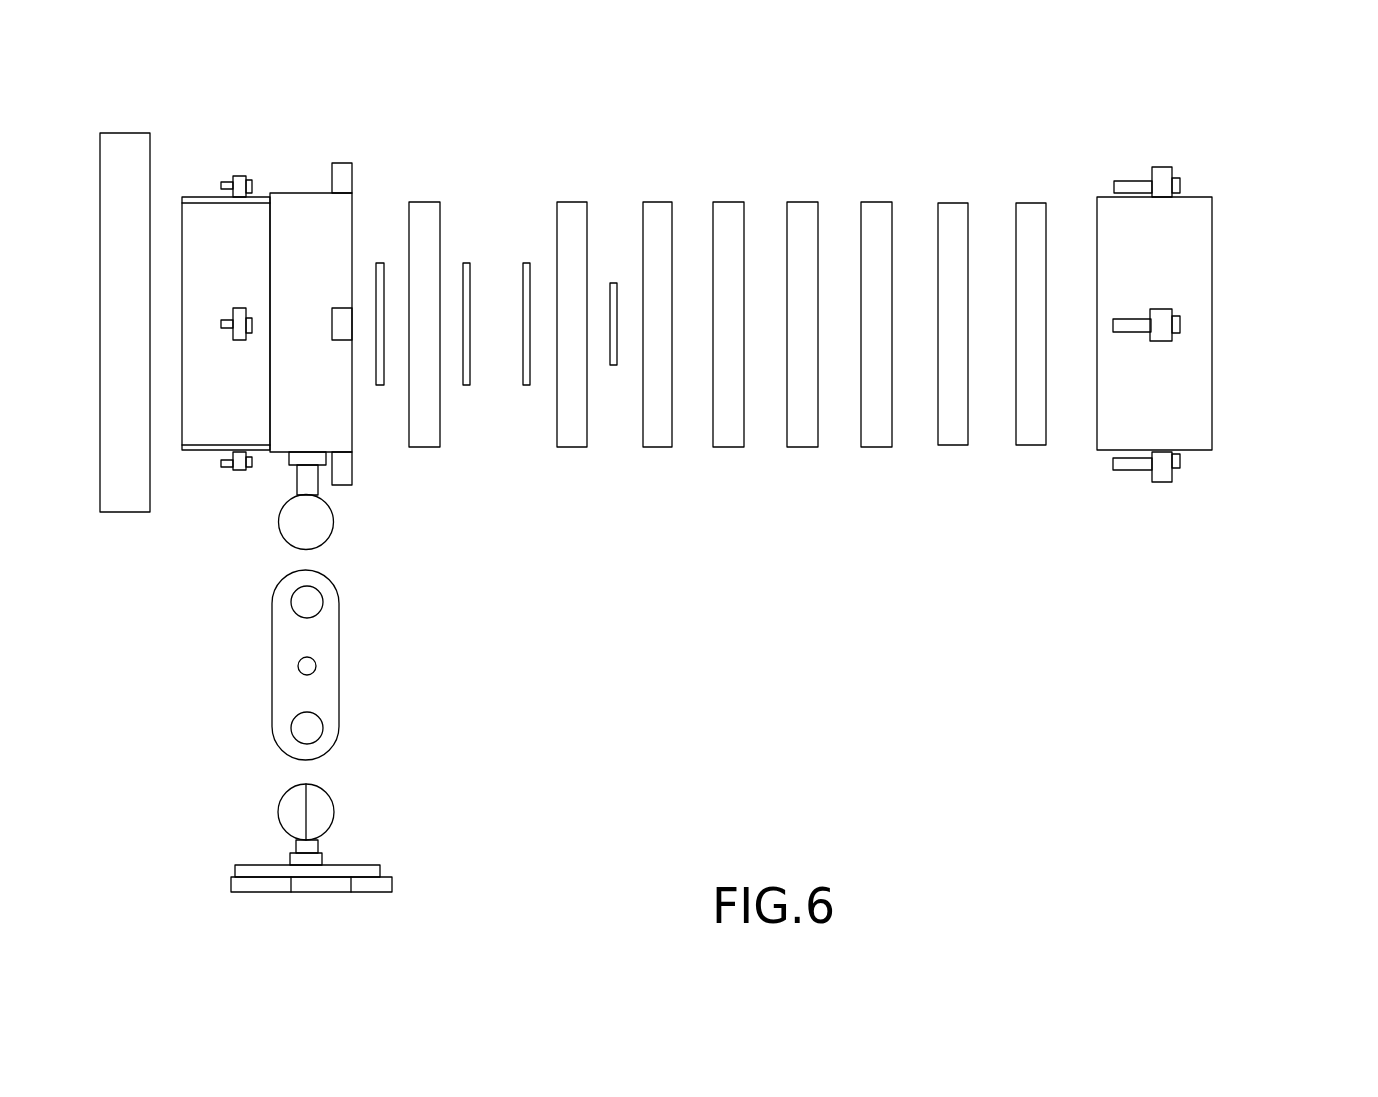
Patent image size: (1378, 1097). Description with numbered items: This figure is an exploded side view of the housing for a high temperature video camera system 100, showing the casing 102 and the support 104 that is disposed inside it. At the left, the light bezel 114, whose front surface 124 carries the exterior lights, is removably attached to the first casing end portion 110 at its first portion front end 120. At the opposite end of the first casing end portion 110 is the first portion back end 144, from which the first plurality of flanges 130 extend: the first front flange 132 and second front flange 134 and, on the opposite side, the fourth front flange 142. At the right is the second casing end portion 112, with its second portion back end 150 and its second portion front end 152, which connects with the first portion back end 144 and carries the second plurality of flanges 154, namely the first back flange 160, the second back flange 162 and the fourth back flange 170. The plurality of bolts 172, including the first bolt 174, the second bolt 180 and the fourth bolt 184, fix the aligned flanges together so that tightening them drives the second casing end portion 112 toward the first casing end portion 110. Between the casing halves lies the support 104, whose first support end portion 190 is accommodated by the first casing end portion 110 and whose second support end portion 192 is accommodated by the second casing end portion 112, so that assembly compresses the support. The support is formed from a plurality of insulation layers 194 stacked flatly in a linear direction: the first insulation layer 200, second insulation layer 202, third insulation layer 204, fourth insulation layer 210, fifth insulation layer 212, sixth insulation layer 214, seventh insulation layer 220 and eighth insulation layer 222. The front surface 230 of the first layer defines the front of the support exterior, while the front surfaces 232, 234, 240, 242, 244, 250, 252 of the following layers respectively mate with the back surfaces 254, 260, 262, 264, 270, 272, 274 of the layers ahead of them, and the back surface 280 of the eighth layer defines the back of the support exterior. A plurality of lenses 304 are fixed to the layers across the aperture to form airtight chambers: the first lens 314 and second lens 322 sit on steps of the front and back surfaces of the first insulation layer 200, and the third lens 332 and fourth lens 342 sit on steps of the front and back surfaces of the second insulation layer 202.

The high temperature video camera system 100 is at (940, 688).
The casing 102 is at (259, 296).
The support 104 is at (795, 121).
The first casing end portion 110 is at (220, 400).
The second casing end portion 112 is at (1204, 366).
The light bezel 114 is at (121, 351).
The first portion front end 120 is at (205, 218).
The front surface 124 is at (100, 505).
The first plurality of flanges 130 is at (237, 185).
The first front flange 132 is at (237, 340).
The second front flange 134 is at (240, 130).
The fourth front flange 142 is at (240, 470).
The first portion back end 144 is at (325, 235).
The second portion back end 150 is at (1204, 366).
The second portion front end 152 is at (1125, 390).
The second plurality of flanges 154 is at (1117, 106).
The first back flange 160 is at (1226, 226).
The second back flange 162 is at (1117, 106).
The fourth back flange 170 is at (1232, 492).
The plurality of bolts 172 is at (1177, 178).
The first bolt 174 is at (1140, 318).
The second bolt 180 is at (1146, 124).
The fourth bolt 184 is at (1175, 462).
The first support end portion 190 is at (435, 178).
The second support end portion 192 is at (990, 162).
The plurality of insulation layers 194 is at (728, 553).
The first insulation layer 200 is at (427, 381).
The second insulation layer 202 is at (552, 385).
The third insulation layer 204 is at (659, 331).
The fourth insulation layer 210 is at (726, 358).
The fifth insulation layer 212 is at (800, 363).
The sixth insulation layer 214 is at (880, 388).
The seventh insulation layer 220 is at (953, 329).
The eighth insulation layer 222 is at (1036, 304).
The front surface of the first insulation layer 230 is at (427, 362).
The front surface of the second insulation layer 232 is at (552, 364).
The front surface of the third insulation layer 234 is at (659, 331).
The front surface of the fourth insulation layer 240 is at (726, 358).
The front surface of the fifth insulation layer 242 is at (800, 363).
The front surface of the sixth insulation layer 244 is at (880, 388).
The front surface of the seventh insulation layer 250 is at (970, 368).
The front surface of the eighth insulation layer 252 is at (1043, 323).
The back surface of the first insulation layer 254 is at (440, 395).
The back surface of the second insulation layer 260 is at (587, 340).
The back surface of the third insulation layer 262 is at (672, 337).
The back surface of the fourth insulation layer 264 is at (744, 337).
The back surface of the fifth insulation layer 270 is at (818, 337).
The back surface of the sixth insulation layer 272 is at (892, 340).
The back surface of the seventh insulation layer 274 is at (968, 325).
The back surface of the eighth insulation layer 280 is at (1045, 218).
The plurality of lenses 304 is at (380, 263).
The first lens 314 is at (366, 223).
The second lens 322 is at (466, 263).
The third lens 332 is at (527, 263).
The fourth lens 342 is at (614, 283).